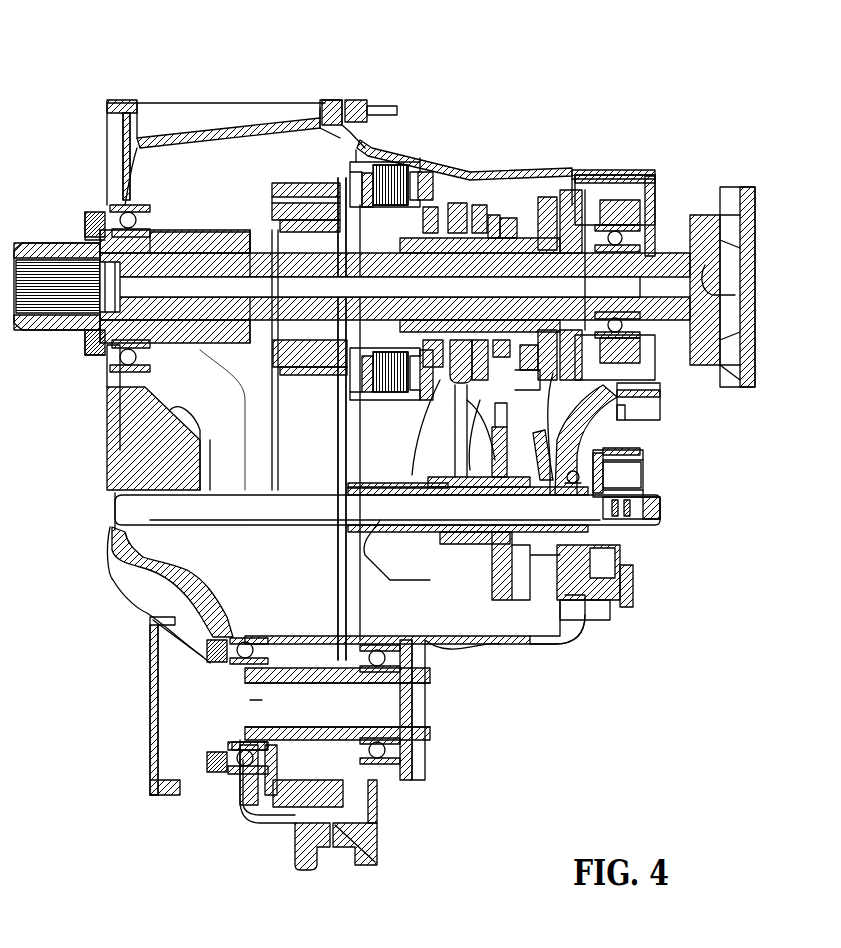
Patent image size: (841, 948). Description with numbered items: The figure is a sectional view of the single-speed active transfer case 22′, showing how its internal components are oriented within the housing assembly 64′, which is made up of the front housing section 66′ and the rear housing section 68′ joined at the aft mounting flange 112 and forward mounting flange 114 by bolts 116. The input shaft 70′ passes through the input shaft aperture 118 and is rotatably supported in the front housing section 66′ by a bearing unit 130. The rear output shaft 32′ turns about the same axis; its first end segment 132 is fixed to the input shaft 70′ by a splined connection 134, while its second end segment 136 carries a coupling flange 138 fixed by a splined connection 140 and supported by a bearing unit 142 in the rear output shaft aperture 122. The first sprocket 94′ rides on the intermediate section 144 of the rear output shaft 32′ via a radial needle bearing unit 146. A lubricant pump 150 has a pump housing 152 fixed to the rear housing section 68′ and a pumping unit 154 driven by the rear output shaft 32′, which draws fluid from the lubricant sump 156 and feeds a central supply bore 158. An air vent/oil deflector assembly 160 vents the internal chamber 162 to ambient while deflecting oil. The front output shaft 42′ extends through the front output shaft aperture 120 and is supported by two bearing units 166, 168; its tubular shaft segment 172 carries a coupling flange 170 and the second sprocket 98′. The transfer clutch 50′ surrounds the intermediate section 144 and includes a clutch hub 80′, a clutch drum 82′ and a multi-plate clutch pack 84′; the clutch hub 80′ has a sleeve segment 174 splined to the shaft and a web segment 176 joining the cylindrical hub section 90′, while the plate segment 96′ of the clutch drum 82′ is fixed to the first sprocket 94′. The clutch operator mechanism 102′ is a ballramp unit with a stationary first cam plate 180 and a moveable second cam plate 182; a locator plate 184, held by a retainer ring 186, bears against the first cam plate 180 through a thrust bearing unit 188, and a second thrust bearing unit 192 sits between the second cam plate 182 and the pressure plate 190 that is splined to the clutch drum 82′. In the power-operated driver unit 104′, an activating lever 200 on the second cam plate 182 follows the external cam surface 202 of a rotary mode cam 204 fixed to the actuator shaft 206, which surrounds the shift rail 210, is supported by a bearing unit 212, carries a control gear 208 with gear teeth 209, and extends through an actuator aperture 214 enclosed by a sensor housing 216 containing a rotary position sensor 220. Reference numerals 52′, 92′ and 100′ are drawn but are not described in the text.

The transfer case 22′ is at (585, 97).
The rear output shaft 32′ is at (745, 182).
The front output shaft 42′ is at (140, 617).
The transfer clutch 50′ is at (400, 150).
The clutch housing 52′ is at (598, 432).
The housing assembly 64′ is at (345, 95).
The front housing section 66′ is at (205, 107).
The rear housing section 68′ is at (565, 628).
The input shaft 70′ is at (45, 345).
The clutch hub 80′ is at (385, 253).
The clutch drum 82′ is at (345, 420).
The multi-plate clutch pack 84′ is at (398, 168).
The cylindrical hub section 90′ is at (396, 385).
The rotor support 92′ is at (345, 370).
The first sprocket 94′ is at (272, 215).
The plate segment 96′ is at (350, 398).
The second sprocket 98′ is at (365, 790).
The lower housing 100′ is at (290, 820).
The clutch operator mechanism 102′ is at (548, 195).
The power-operated driver unit 104′ is at (635, 480).
The aft mounting flange 112 is at (315, 850).
The forward mounting flange 114 is at (375, 848).
The bolts 116 is at (370, 100).
The input shaft aperture 118 is at (112, 215).
The front output shaft aperture 120 is at (222, 770).
The rear output shaft aperture 122 is at (680, 232).
The bearing unit 130 is at (118, 372).
The first end segment 132 is at (108, 275).
The splined connection 134 is at (205, 255).
The second end segment 136 is at (690, 252).
The coupling flange 138 is at (748, 365).
The splined connection 140 is at (740, 294).
The bearing unit 142 is at (628, 220).
The intermediate section 144 is at (370, 286).
The radial needle bearing unit 146 is at (272, 350).
The lubricant pump 150 is at (630, 200).
The pump housing 152 is at (660, 390).
The pumping unit 154 is at (400, 252).
The lubricant sump 156 is at (410, 550).
The central supply bore 158 is at (522, 336).
The air vent/oil deflector assembly 160 is at (208, 450).
The internal chamber 162 is at (200, 190).
The bearing unit 166 is at (255, 780).
The bearing unit 168 is at (385, 752).
The coupling flange 170 is at (148, 790).
The tubular shaft segment 172 is at (325, 672).
The sleeve segment 174 is at (430, 240).
The web segment 176 is at (340, 190).
The first cam plate 180 is at (505, 215).
The second cam plate 182 is at (492, 214).
The locator plate 184 is at (568, 188).
The retainer ring 186 is at (572, 180).
The thrust bearing unit 188 is at (510, 335).
The pressure plate 190 is at (455, 202).
The second thrust bearing unit 192 is at (455, 355).
The activating lever 200 is at (456, 425).
The external cam surface 202 is at (478, 545).
The rotary mode cam 204 is at (430, 535).
The actuator shaft 206 is at (365, 495).
The control gear 208 is at (540, 560).
The gear teeth 209 is at (580, 608).
The shift rail 210 is at (112, 518).
The bearing unit 212 is at (625, 552).
The actuator aperture 214 is at (615, 472).
The sensor housing 216 is at (650, 492).
The rotary position sensor 220 is at (652, 520).